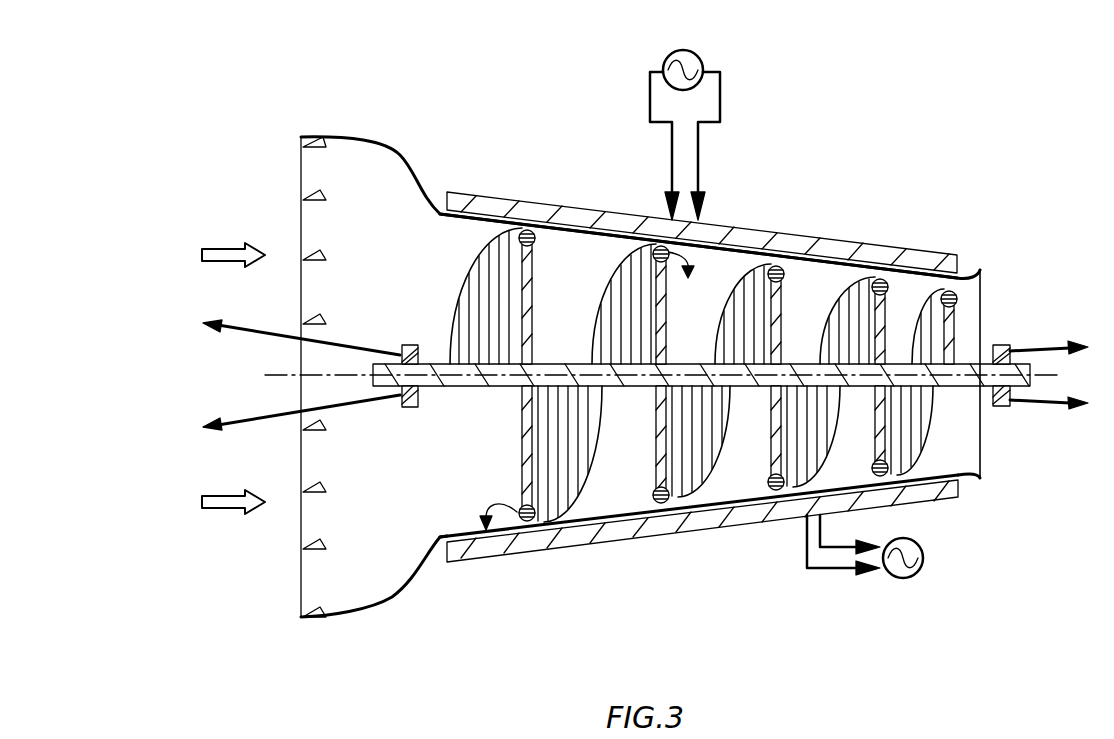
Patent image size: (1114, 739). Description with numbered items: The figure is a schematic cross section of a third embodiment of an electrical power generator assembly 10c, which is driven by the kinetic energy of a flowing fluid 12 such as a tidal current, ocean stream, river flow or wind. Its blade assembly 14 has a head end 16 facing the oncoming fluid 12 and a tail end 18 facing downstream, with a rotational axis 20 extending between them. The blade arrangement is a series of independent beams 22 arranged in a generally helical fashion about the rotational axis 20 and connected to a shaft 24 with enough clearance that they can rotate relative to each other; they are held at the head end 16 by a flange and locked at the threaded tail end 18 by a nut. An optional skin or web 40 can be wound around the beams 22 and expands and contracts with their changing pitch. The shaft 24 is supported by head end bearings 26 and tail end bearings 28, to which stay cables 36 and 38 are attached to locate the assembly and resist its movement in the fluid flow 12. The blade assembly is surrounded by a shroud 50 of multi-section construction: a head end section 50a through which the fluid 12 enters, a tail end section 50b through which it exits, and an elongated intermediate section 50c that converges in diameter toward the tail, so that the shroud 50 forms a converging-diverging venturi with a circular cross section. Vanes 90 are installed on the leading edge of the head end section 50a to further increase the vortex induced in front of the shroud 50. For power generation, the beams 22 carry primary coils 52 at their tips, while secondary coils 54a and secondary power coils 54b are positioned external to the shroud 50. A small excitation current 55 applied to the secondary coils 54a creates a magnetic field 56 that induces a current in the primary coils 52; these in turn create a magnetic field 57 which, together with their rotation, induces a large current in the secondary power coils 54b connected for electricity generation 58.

The electrical power generator assembly 10c is at (512, 150).
The flowing fluid 12 is at (230, 250).
The blade assembly 14 is at (808, 287).
The head end 16 is at (467, 425).
The tail end 18 is at (937, 450).
The rotational axis 20 is at (327, 375).
The independent beams 22 is at (470, 310).
The shaft 24 is at (443, 400).
The head end bearings 26 is at (409, 343).
The tail end bearings 28 is at (1000, 343).
The stay cables 36 is at (352, 340).
The stay cables 38 is at (1040, 347).
The skin or web 40 is at (665, 354).
The shroud 50 is at (428, 198).
The head end section 50a is at (301, 617).
The tail end section 50b is at (923, 582).
The intermediate section 50c is at (450, 563).
The primary coils 52 is at (660, 240).
The secondary coils 54a is at (567, 212).
The secondary power coils 54b is at (673, 530).
The excitation current 55 is at (720, 90).
The magnetic field 56 is at (727, 243).
The magnetic field 57 is at (505, 510).
The electricity generation 58 is at (925, 540).
The vanes 90 is at (305, 235).